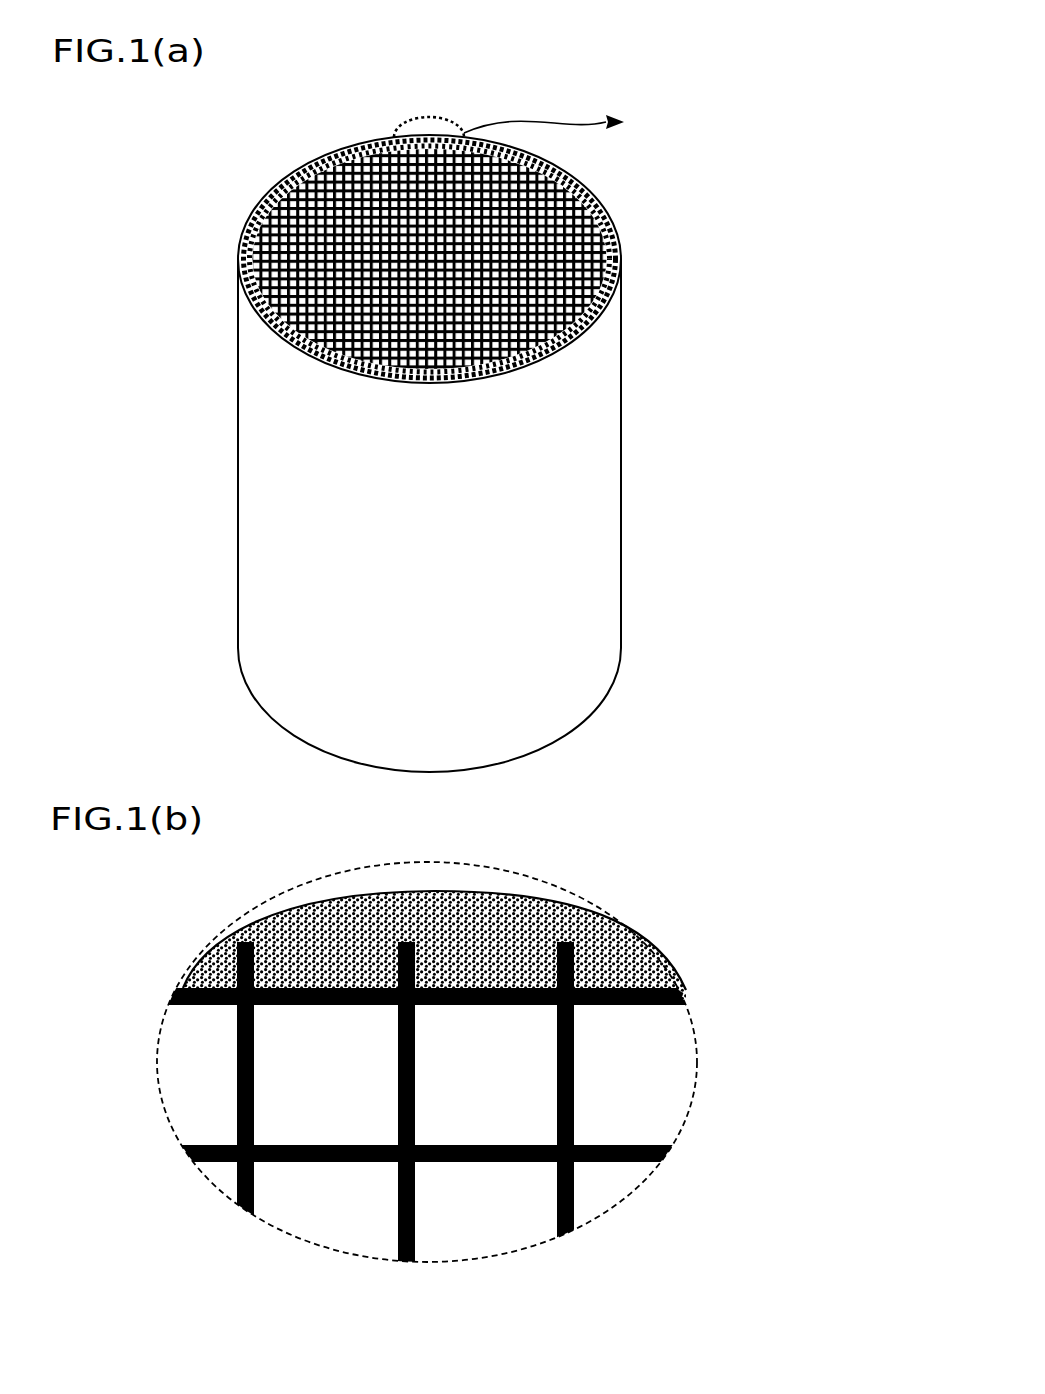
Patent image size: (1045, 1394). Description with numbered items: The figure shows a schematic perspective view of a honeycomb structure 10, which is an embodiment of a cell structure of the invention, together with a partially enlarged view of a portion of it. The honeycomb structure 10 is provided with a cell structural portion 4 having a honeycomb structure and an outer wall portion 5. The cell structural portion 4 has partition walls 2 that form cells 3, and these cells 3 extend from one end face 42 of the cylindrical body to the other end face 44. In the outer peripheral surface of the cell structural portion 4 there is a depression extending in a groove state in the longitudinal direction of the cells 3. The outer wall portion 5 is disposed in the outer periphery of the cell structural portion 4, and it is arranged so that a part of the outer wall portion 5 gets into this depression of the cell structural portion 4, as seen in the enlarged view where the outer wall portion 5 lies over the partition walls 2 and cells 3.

In FIG. 1A, the honeycomb structure 10 is at (828, 77).
In FIG. 1B, the partition walls 2 is at (574, 1180).
In FIG. 1B, the cells 3 is at (530, 1090).
In FIG. 1A, the cell structural portion 4 is at (523, 212).
In FIG. 1B, the cell structural portion 4 is at (693, 1040).
In FIG. 1A, the outer wall portion 5 is at (606, 431).
In FIG. 1B, the outer wall portion 5 is at (630, 940).
In FIG. 1A, the one end face 42 is at (223, 263).
In FIG. 1A, the other end face 44 is at (275, 750).